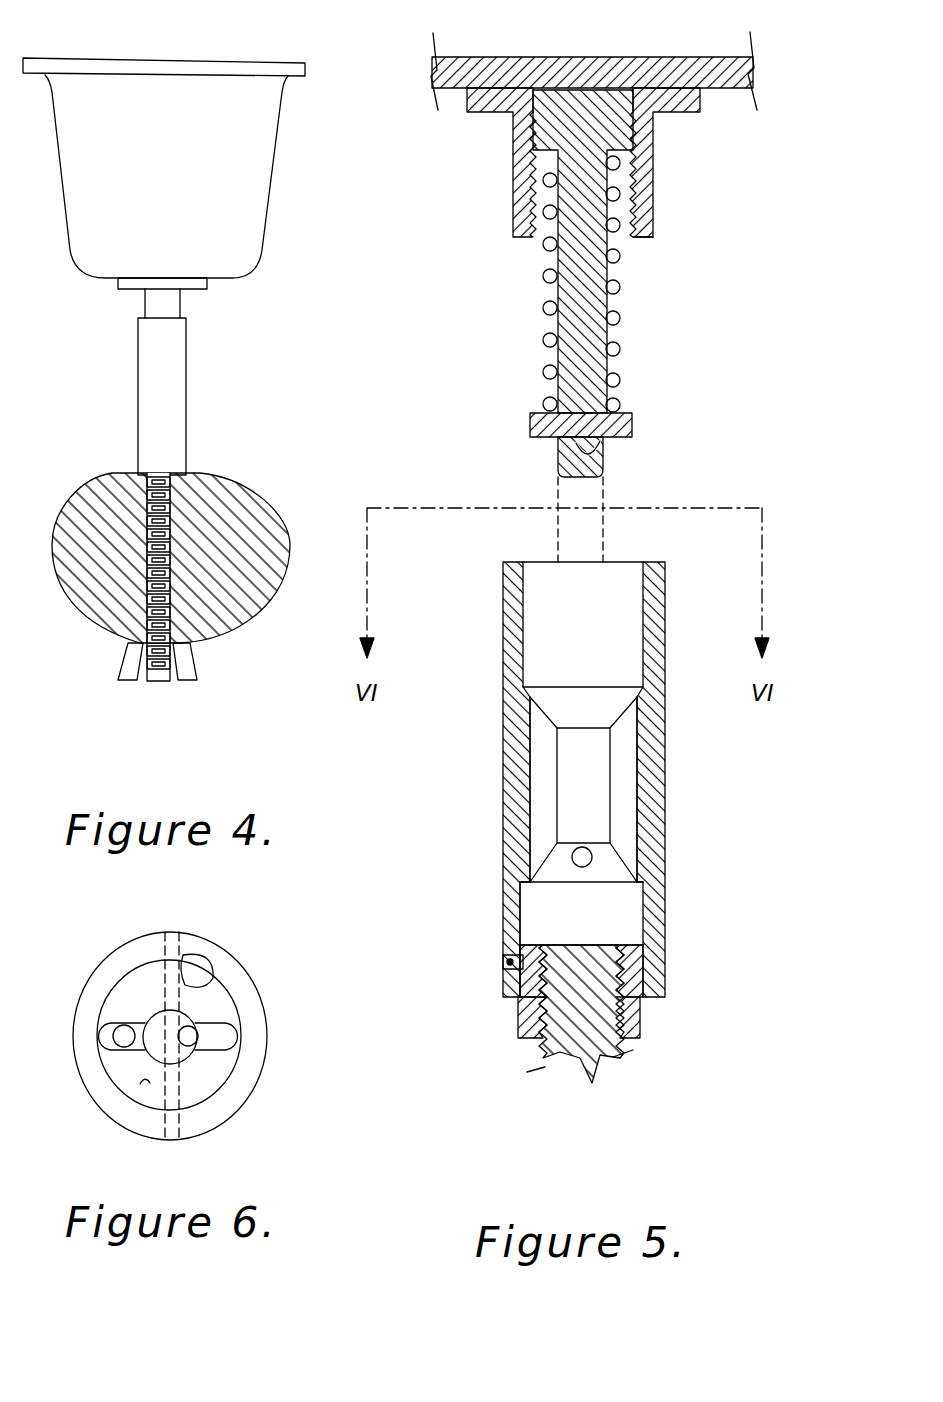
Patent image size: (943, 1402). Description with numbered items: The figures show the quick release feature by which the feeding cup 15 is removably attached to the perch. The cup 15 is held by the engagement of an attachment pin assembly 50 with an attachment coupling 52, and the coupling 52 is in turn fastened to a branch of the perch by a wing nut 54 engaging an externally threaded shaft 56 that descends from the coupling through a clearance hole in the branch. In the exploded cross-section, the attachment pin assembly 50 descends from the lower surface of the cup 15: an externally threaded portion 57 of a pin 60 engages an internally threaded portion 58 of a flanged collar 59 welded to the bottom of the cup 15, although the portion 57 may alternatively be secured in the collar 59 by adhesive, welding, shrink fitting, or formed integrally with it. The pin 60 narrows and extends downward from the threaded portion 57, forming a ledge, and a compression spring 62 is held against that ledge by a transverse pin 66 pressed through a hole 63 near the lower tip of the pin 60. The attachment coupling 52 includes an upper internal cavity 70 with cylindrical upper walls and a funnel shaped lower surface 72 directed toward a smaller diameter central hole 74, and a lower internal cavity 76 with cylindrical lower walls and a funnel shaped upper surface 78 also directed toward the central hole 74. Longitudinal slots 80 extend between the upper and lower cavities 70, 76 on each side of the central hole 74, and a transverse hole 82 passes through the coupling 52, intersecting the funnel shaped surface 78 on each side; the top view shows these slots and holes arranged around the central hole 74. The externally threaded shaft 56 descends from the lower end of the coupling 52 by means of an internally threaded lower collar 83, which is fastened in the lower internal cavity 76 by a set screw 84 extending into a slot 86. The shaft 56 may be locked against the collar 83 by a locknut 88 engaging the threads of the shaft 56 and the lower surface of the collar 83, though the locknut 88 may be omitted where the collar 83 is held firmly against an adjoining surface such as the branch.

In FIG. 4, the feeding cup 15 is at (270, 196).
In FIG. 5, the feeding cup 15 is at (600, 57).
In FIG. 4, the attachment pin assembly 50 is at (208, 319).
In FIG. 5, the attachment pin assembly 50 is at (640, 308).
In FIG. 4, the attachment coupling 52 is at (186, 392).
In FIG. 5, the attachment coupling 52 is at (662, 770).
In FIG. 6, the attachment coupling 52 is at (240, 1110).
In FIG. 4, the wing nut 54 is at (198, 665).
In FIG. 4, the externally threaded shaft 56 is at (160, 682).
In FIG. 5, the externally threaded shaft 56 is at (540, 1058).
In FIG. 5, the externally threaded portion 57 is at (530, 155).
In FIG. 5, the internally threaded portion 58 is at (650, 168).
In FIG. 5, the flanged collar 59 is at (655, 228).
In FIG. 5, the pin 60 is at (604, 453).
In FIG. 5, the compression spring 62 is at (620, 357).
In FIG. 5, the hole 63 is at (572, 455).
In FIG. 5, the transverse pin 66 is at (632, 420).
In FIG. 5, the upper internal cavity 70 is at (583, 648).
In FIG. 6, the upper internal cavity 70 is at (180, 958).
In FIG. 5, the funnel shaped lower surface 72 is at (587, 714).
In FIG. 6, the funnel shaped lower surface 72 is at (150, 1083).
In FIG. 5, the central hole 74 is at (590, 812).
In FIG. 6, the central hole 74 is at (190, 1027).
In FIG. 5, the lower internal cavity 76 is at (596, 900).
In FIG. 5, the funnel shaped upper surface 78 is at (562, 875).
In FIG. 5, the longitudinal slots 80 is at (542, 775).
In FIG. 6, the longitudinal slots 80 is at (98, 1033).
In FIG. 5, the transverse hole 82 is at (600, 857).
In FIG. 6, the transverse hole 82 is at (168, 967).
In FIG. 5, the internally threaded lower collar 83 is at (655, 1003).
In FIG. 5, the set screw 84 is at (503, 962).
In FIG. 5, the slot 86 is at (520, 935).
In FIG. 5, the locknut 88 is at (520, 1020).